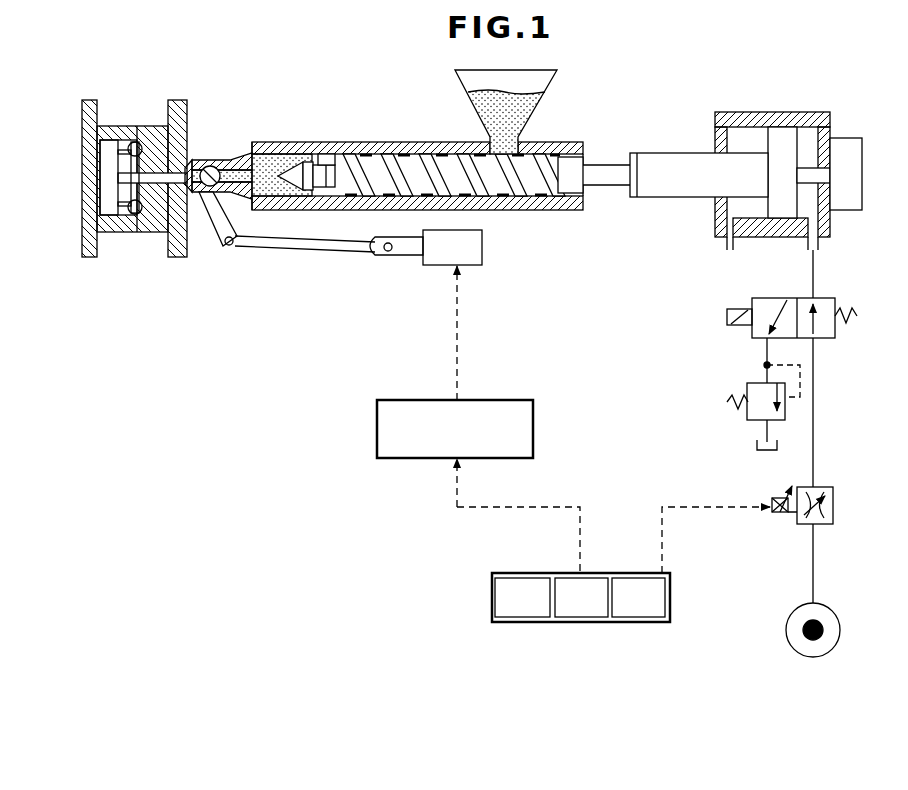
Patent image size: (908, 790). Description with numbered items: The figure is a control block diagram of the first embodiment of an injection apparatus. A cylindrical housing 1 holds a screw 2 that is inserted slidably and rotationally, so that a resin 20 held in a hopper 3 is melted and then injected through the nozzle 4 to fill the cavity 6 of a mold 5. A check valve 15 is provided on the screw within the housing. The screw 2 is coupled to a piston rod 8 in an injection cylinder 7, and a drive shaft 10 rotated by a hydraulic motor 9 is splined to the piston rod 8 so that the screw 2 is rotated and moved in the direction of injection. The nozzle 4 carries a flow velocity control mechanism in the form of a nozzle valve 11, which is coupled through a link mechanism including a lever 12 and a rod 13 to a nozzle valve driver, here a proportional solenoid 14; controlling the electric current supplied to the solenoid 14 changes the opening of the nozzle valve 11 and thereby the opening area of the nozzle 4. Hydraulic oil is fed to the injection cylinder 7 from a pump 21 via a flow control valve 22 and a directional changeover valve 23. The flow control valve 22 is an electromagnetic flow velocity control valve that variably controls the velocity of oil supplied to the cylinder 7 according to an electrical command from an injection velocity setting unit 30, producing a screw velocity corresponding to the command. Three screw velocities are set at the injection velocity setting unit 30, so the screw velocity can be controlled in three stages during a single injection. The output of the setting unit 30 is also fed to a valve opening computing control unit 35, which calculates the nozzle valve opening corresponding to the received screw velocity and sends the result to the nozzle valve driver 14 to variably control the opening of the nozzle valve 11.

The cylindrical housing 1 is at (357, 141).
The screw 2 is at (487, 182).
The hopper 3 is at (540, 83).
The nozzle 4 is at (188, 167).
The mold 5 is at (150, 135).
The cavity 6 is at (137, 226).
The injection cylinder 7 is at (743, 109).
The piston rod 8 is at (663, 155).
The hydraulic motor 9 is at (855, 175).
The drive shaft 10 is at (806, 167).
The nozzle valve 11 is at (212, 167).
The lever 12 is at (222, 246).
The rod 13 is at (322, 252).
The proportional solenoid 14 is at (472, 258).
The check valve 15 is at (327, 152).
The resin 20 is at (530, 117).
The pump 21 is at (840, 630).
The flow control valve 22 is at (834, 491).
The directional changeover valve 23 is at (838, 301).
The injection velocity setting unit 30 is at (614, 573).
The valve opening computing control unit 35 is at (508, 400).